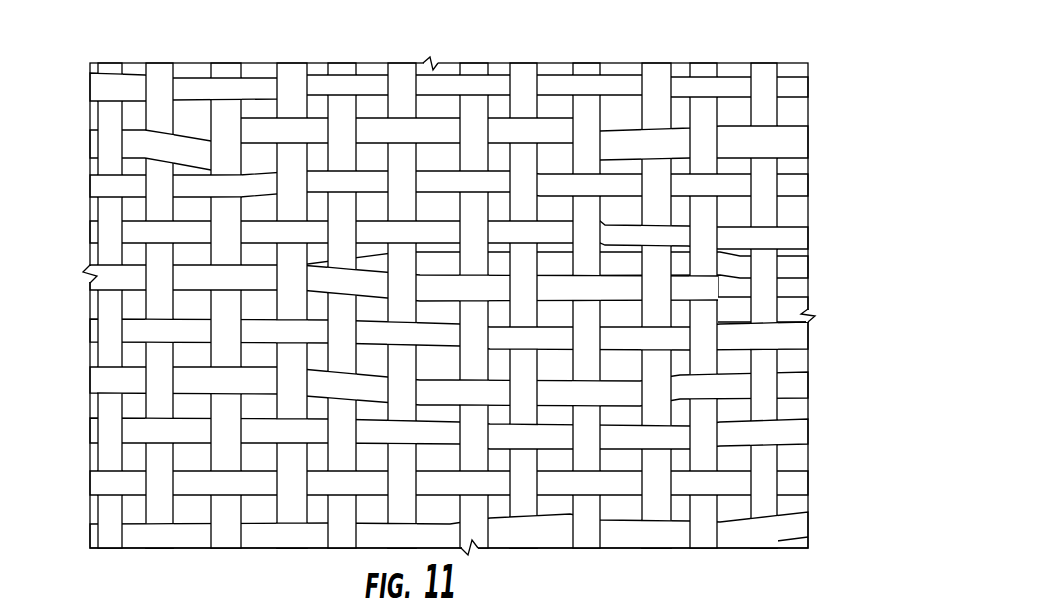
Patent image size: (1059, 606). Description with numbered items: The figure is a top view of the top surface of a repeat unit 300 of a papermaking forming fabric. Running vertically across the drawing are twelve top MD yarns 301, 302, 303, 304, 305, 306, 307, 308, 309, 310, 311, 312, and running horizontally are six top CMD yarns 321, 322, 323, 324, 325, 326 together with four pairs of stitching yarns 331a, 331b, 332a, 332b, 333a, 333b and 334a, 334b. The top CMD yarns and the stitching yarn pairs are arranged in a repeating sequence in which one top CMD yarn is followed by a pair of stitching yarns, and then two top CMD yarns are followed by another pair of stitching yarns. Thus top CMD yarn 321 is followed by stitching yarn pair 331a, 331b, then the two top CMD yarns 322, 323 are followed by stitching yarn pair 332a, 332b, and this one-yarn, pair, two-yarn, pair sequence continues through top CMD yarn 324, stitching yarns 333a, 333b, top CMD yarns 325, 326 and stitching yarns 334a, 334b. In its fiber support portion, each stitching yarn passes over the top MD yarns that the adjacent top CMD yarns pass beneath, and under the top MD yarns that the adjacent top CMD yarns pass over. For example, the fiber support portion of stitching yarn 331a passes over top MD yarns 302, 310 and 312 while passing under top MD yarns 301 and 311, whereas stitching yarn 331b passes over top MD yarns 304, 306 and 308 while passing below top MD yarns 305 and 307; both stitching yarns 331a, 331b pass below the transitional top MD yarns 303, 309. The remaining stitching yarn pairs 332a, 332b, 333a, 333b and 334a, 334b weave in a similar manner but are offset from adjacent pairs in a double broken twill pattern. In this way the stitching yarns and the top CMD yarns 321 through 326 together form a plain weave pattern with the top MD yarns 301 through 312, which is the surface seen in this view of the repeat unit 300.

The repeat unit 300 is at (55, 162).
The top MD yarn 301 is at (105, 70).
The top MD yarn 302 is at (162, 72).
The top MD yarn 303 is at (225, 72).
The top MD yarn 304 is at (287, 72).
The top MD yarn 305 is at (336, 72).
The top MD yarn 306 is at (400, 72).
The top MD yarn 307 is at (470, 72).
The top MD yarn 308 is at (520, 77).
The top MD yarn 309 is at (588, 70).
The top MD yarn 310 is at (652, 72).
The top MD yarn 311 is at (700, 72).
The top MD yarn 312 is at (760, 80).
The top CMD yarn 321 is at (795, 87).
The top CMD yarn 322 is at (795, 190).
The top CMD yarn 323 is at (795, 239).
The top CMD yarn 324 is at (795, 337).
The top CMD yarn 325 is at (795, 433).
The top CMD yarn 326 is at (798, 483).
The stitching yarn 331a is at (188, 130).
The stitching yarn 331b is at (795, 143).
The stitching yarn 332a is at (795, 270).
The stitching yarn 332b is at (795, 300).
The stitching yarn 333a is at (105, 380).
The stitching yarn 333b is at (605, 402).
The stitching yarn 334a is at (746, 530).
The stitching yarn 334b is at (168, 537).